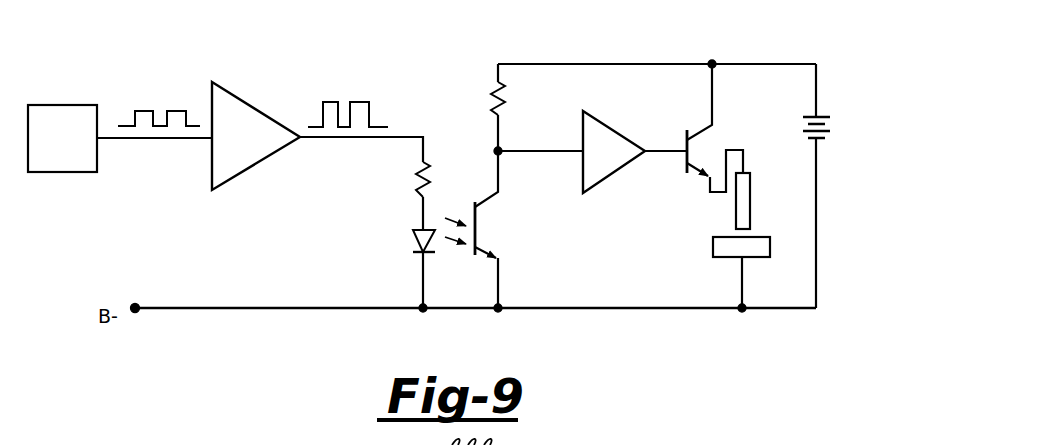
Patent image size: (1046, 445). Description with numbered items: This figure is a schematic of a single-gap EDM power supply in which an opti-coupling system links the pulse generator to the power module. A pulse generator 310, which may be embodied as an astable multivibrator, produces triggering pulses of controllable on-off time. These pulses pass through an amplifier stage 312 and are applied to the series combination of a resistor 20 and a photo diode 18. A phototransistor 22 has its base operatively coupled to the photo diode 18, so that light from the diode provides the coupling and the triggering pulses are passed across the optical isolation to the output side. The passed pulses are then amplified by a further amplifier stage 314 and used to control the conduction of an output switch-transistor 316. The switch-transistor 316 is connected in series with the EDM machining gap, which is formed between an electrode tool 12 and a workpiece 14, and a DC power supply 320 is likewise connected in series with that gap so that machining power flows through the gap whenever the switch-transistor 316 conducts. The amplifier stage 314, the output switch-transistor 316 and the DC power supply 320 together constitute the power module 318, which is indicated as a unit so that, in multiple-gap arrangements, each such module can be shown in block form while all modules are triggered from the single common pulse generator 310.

The pulse generator 310 is at (57, 105).
The amplifier stage 312 is at (250, 114).
The resistor 20 is at (421, 180).
The photo diode 18 is at (412, 236).
The phototransistor 22 is at (492, 228).
The amplifier stage 314 is at (610, 140).
The output switch-transistor 316 is at (715, 139).
The power module 318 is at (777, 47).
The DC power supply 320 is at (818, 114).
The electrode tool 12 is at (737, 210).
The workpiece 14 is at (726, 257).